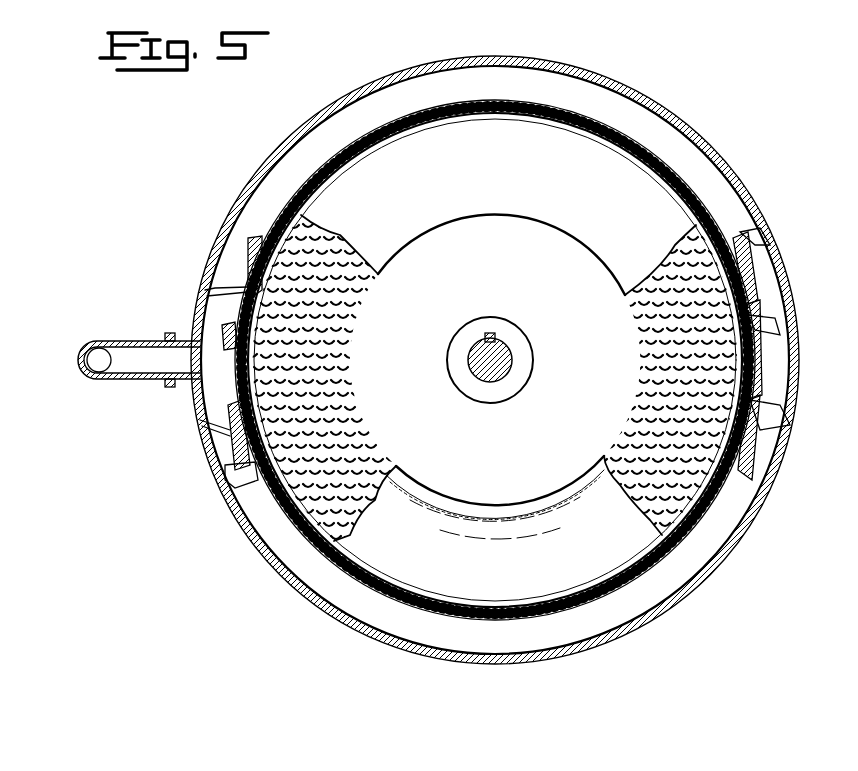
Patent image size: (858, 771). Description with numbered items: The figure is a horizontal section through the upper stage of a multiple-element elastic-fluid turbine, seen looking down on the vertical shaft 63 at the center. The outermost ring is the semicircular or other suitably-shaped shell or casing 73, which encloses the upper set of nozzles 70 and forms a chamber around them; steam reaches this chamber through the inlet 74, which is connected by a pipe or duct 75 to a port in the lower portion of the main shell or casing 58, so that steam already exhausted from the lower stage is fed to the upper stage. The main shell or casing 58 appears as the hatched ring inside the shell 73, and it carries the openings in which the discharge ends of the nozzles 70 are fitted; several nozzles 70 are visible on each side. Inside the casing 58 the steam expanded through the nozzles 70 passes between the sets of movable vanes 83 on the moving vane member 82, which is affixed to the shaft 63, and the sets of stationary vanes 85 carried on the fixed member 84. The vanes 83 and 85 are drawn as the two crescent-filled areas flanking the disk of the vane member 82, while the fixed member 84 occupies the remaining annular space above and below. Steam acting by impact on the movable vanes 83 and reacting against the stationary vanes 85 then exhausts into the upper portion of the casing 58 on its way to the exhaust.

The main shell or casing 58 is at (505, 104).
The vertical shaft 63 is at (500, 358).
The nozzles 70 is at (225, 297).
The semicircular shell or casing 73 is at (490, 64).
The inlet 74 is at (175, 357).
The pipe or duct 75 is at (80, 360).
The moving vane member 82 is at (501, 359).
The movable vanes 83 is at (305, 368).
The fixed member 84 is at (495, 370).
The stationary vanes 85 is at (320, 405).